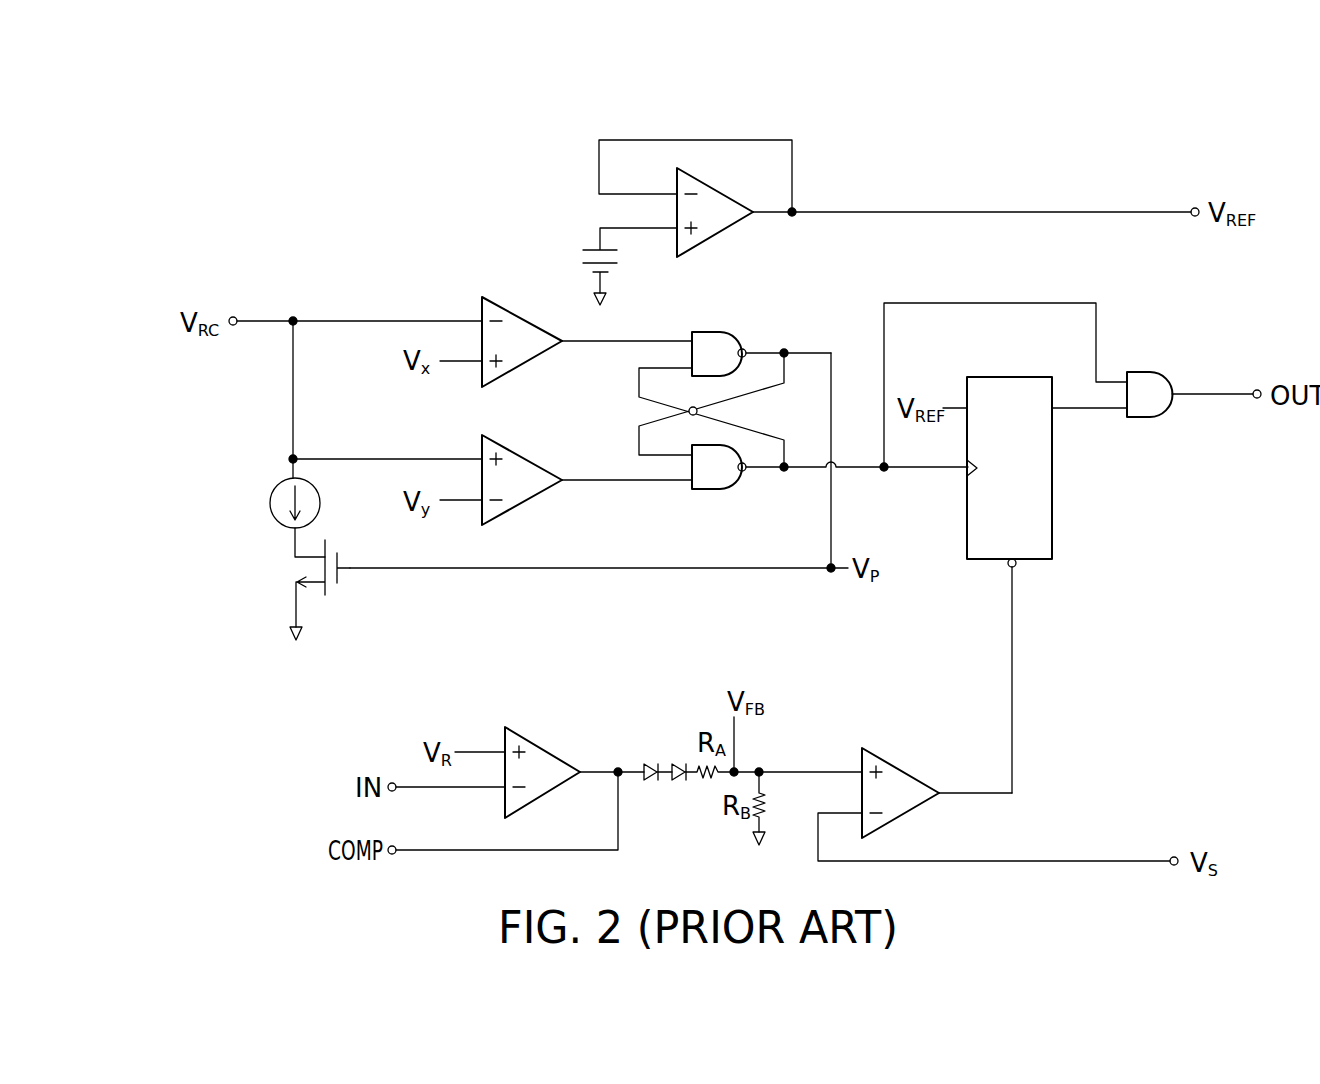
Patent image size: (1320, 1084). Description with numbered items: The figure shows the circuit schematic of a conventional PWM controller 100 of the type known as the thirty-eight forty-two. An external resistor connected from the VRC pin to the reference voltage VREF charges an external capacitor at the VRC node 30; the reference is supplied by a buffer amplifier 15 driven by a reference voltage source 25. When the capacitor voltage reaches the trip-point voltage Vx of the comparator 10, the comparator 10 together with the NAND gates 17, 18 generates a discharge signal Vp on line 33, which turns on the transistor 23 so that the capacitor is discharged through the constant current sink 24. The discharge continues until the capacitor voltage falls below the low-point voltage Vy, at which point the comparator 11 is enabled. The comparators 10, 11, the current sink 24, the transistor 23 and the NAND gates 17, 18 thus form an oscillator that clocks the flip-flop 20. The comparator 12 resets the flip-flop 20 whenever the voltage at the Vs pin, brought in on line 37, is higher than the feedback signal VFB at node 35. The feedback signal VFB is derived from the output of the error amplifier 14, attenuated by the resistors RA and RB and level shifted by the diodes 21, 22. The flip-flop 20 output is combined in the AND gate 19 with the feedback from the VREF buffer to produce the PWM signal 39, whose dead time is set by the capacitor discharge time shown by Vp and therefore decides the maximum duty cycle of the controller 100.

The PWM controller 100 is at (1256, 127).
The comparator 10 is at (515, 313).
The comparator 11 is at (530, 457).
The comparator 12 is at (905, 766).
The error amplifier 14 is at (545, 796).
The reference voltage buffer amplifier 15 is at (736, 232).
The NAND gate 17 is at (705, 331).
The NAND gate 18 is at (705, 491).
The AND gate 19 is at (1140, 420).
The flip-flop 20 is at (1053, 521).
The level shift diode 21 is at (651, 782).
The level shift diode 22 is at (679, 782).
The transistor 23 is at (338, 558).
The constant current sink 24 is at (270, 500).
The reference voltage source 25 is at (585, 250).
The VRC node 30 is at (293, 317).
The VP signal line 33 is at (697, 572).
The node 35 is at (820, 770).
The VS output line 37 is at (1076, 860).
The PWM signal 39 is at (1208, 392).